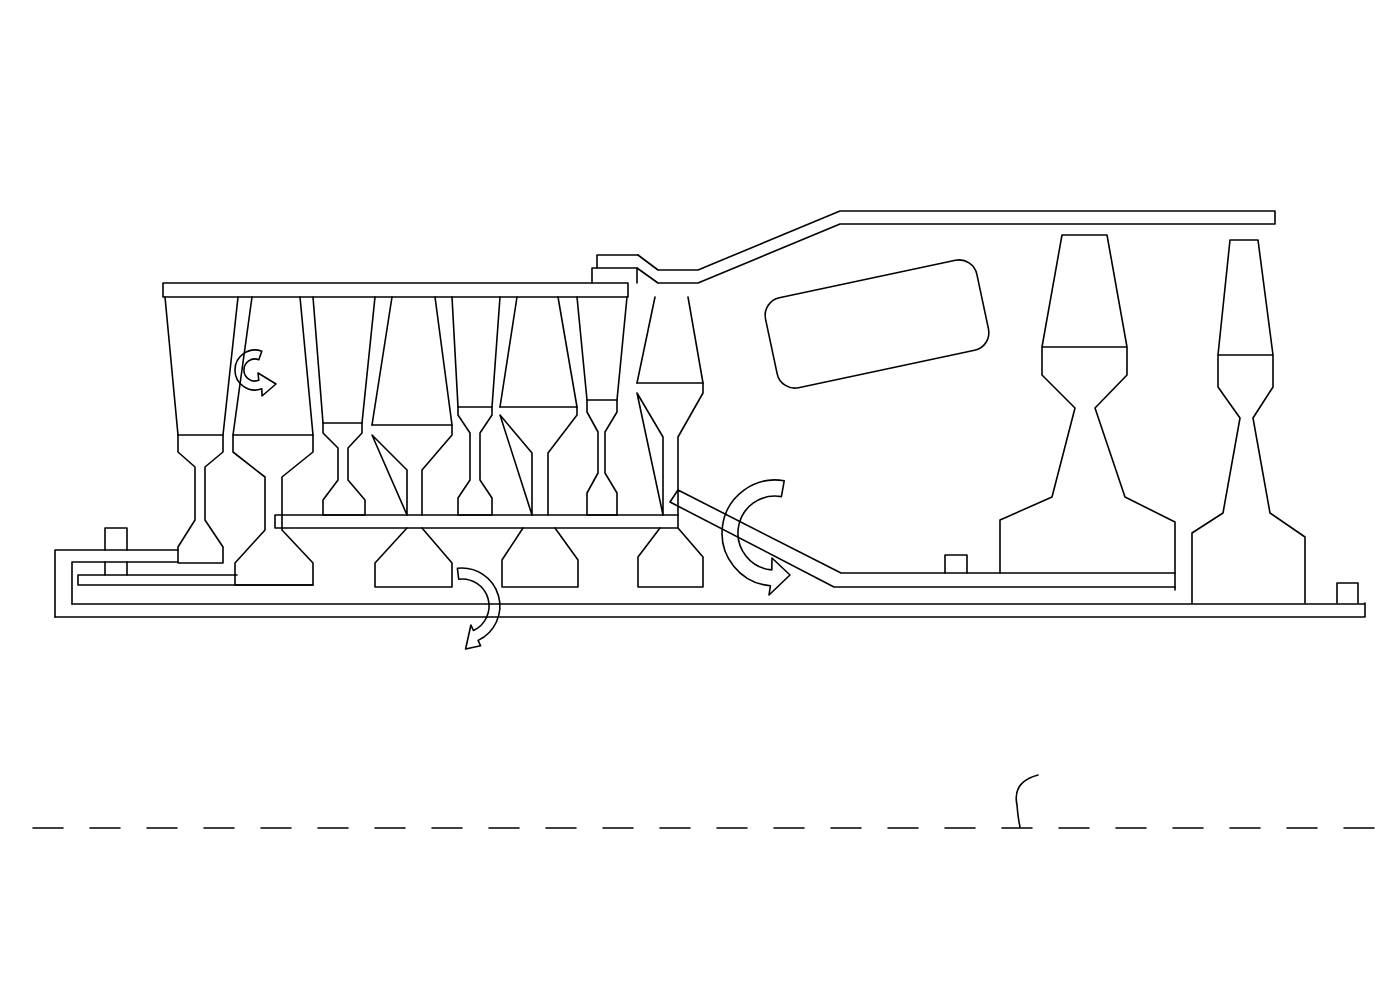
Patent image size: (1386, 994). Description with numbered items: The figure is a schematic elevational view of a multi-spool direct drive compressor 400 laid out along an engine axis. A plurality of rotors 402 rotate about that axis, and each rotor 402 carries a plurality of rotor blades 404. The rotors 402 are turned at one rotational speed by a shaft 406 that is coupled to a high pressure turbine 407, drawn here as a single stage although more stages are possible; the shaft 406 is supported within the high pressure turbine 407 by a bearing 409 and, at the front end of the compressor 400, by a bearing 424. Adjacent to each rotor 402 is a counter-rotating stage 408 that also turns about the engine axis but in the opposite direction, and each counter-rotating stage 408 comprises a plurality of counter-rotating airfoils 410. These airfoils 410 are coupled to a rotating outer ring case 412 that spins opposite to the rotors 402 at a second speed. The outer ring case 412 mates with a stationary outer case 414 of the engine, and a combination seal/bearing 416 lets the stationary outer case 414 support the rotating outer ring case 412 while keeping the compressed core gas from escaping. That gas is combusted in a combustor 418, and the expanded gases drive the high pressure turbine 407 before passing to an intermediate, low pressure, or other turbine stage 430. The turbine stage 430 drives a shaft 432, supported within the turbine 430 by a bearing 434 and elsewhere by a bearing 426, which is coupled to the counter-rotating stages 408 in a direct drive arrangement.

The multi-spool direct drive compressor 400 is at (1014, 57).
The rotor 402 is at (646, 572).
The rotor blades 404 is at (294, 323).
The shaft 406 is at (813, 557).
The high pressure turbine 407 is at (1085, 293).
The counter-rotating stage 408 is at (183, 457).
The bearing 409 is at (955, 555).
The counter-rotating airfoils 410 is at (198, 312).
The rotating outer ring case 412 is at (486, 278).
The stationary outer case 414 is at (804, 226).
The combination seal/bearing 416 is at (591, 271).
The combustor 418 is at (895, 310).
The bearing 424 is at (113, 577).
The bearing 426 is at (112, 525).
The turbine stage 430 is at (1249, 311).
The shaft 432 is at (1117, 608).
The bearing 434 is at (1348, 583).